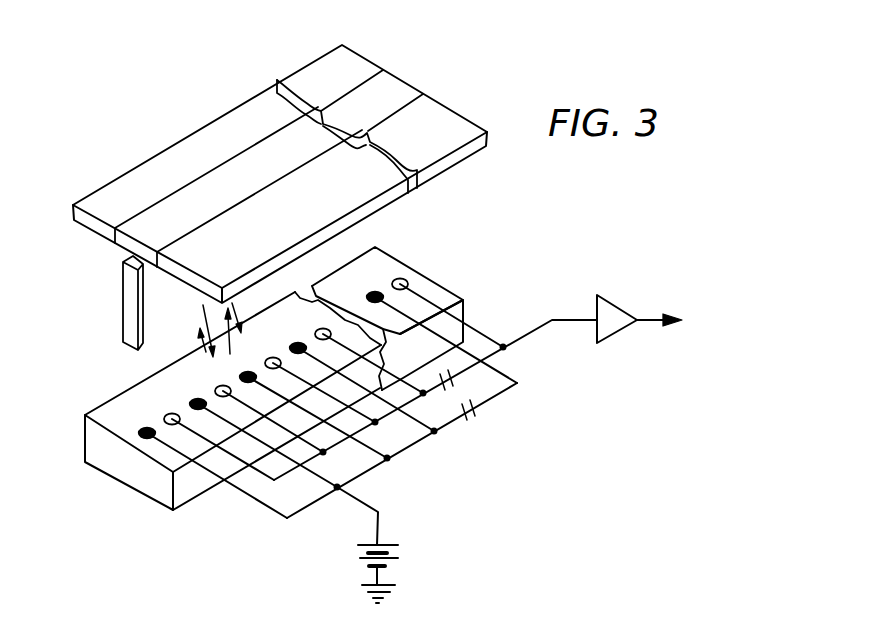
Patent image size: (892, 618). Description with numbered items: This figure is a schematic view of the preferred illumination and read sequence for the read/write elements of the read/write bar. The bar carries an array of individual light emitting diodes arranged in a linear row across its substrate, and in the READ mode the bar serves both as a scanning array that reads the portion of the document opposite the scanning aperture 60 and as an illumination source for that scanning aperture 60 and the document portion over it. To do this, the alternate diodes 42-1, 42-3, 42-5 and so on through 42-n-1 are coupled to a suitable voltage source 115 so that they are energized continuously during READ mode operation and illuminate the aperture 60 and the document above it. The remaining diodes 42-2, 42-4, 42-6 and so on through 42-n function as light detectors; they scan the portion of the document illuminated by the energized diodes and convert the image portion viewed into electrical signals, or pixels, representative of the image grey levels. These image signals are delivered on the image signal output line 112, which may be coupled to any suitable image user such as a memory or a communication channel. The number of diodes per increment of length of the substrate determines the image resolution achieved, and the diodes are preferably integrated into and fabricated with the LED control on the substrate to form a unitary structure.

The scanning aperture 60 is at (396, 93).
The light emitting diode 42-1 is at (145, 434).
The light emitting diode 42-2 is at (164, 416).
The light emitting diode 42-3 is at (197, 401).
The light emitting diode 42-4 is at (222, 388).
The light emitting diode 42-5 is at (249, 371).
The light emitting diode 42-6 is at (317, 332).
The light emitting diode 42-n-1 is at (377, 291).
The light emitting diode 42-n is at (406, 281).
The image signal output line 112 is at (631, 315).
The voltage source 115 is at (388, 544).